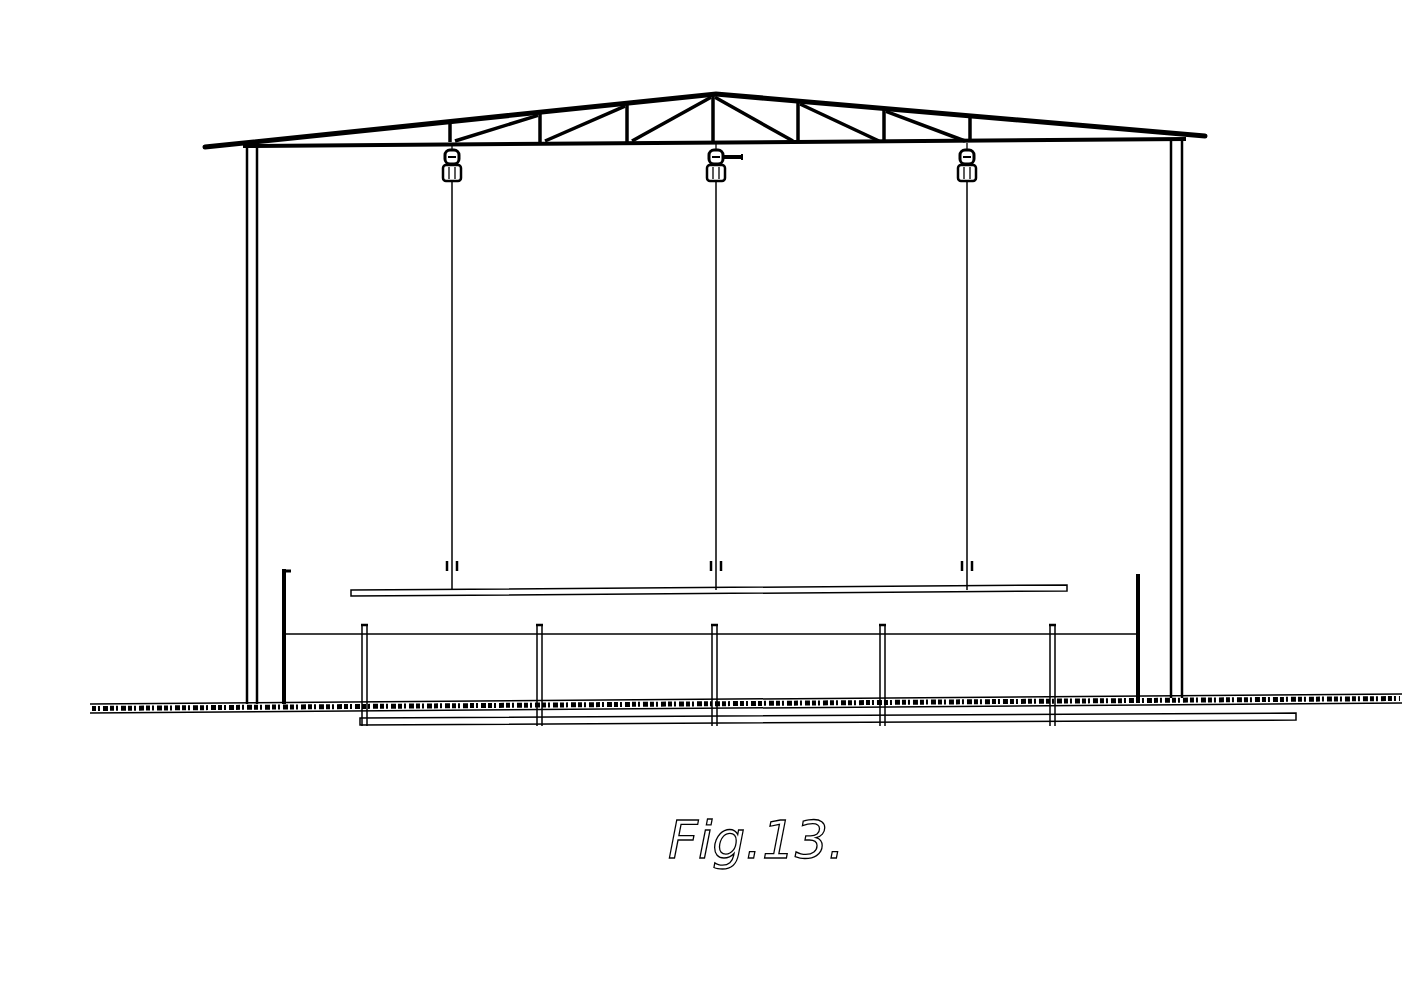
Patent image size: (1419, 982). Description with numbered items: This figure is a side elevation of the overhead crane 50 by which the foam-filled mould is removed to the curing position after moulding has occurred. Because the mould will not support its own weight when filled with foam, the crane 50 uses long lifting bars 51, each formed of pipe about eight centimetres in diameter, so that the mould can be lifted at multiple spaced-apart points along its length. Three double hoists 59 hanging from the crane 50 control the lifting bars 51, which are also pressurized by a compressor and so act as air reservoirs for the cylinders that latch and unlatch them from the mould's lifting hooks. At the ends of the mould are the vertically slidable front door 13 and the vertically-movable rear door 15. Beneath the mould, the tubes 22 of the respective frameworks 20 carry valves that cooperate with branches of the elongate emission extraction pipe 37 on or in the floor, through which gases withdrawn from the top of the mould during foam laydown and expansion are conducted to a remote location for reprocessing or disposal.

The overhead crane 50 is at (533, 130).
The double hoists 59 is at (705, 172).
The lifting bars 51 is at (597, 588).
The rear door 15 is at (290, 578).
The front end wall or door 13 is at (1135, 590).
The frameworks 20 is at (711, 660).
The tubes 22 is at (880, 664).
The emission extraction pipe 37 is at (762, 722).